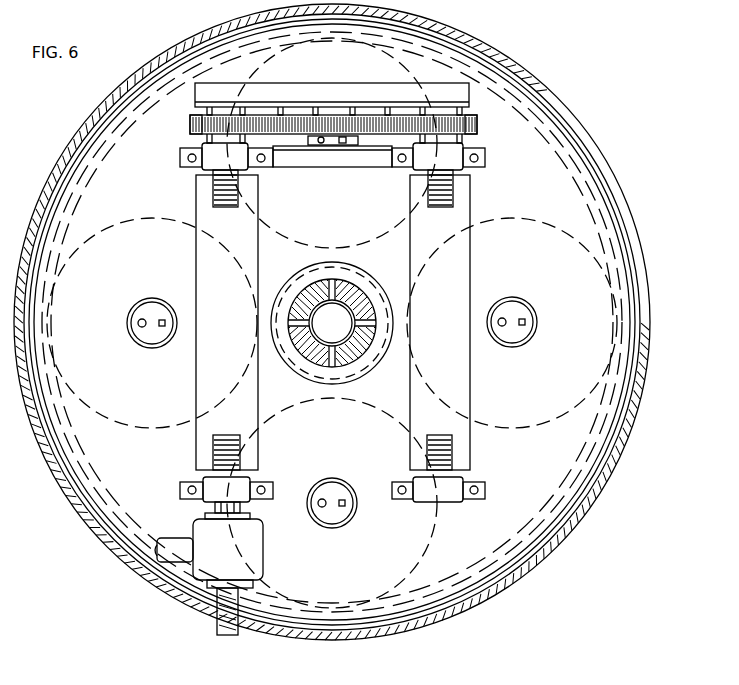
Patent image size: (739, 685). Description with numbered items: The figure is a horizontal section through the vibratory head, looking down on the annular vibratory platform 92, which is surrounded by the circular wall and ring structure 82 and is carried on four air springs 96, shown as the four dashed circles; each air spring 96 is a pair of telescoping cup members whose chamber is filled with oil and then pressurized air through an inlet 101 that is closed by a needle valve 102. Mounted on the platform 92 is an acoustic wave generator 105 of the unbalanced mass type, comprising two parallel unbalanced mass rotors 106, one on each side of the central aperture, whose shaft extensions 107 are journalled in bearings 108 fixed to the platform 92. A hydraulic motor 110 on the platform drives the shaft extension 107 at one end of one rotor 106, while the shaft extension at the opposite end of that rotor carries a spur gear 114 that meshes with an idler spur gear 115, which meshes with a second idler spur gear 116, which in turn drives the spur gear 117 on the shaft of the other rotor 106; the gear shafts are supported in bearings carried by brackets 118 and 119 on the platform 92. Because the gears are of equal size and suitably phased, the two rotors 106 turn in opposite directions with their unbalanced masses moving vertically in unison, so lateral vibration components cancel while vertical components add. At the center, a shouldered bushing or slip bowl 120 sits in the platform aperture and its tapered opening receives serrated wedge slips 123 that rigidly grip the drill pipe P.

The outer casing 82 is at (102, 532).
The annular vibratory platform 92 is at (548, 504).
The air springs 96 is at (280, 237).
The inlet 101 is at (502, 328).
The needle valve 102 is at (524, 318).
The acoustic wave generator 105 is at (472, 262).
The unbalanced mass rotors 106 is at (196, 268).
The shaft extensions 107 is at (213, 178).
The bearings 108 is at (202, 152).
The hydraulic motor 110 is at (170, 557).
The spur gear 114 is at (190, 124).
The idler spur gear 115 is at (294, 112).
The idler spur gear 116 is at (358, 113).
The spur gear 117 is at (477, 122).
The bracket 118 is at (364, 150).
The bracket 119 is at (378, 106).
The shouldered bushing or slip bowl 120 is at (365, 365).
The serrated wedge slips 123 is at (312, 354).
The drill pipe P is at (345, 303).